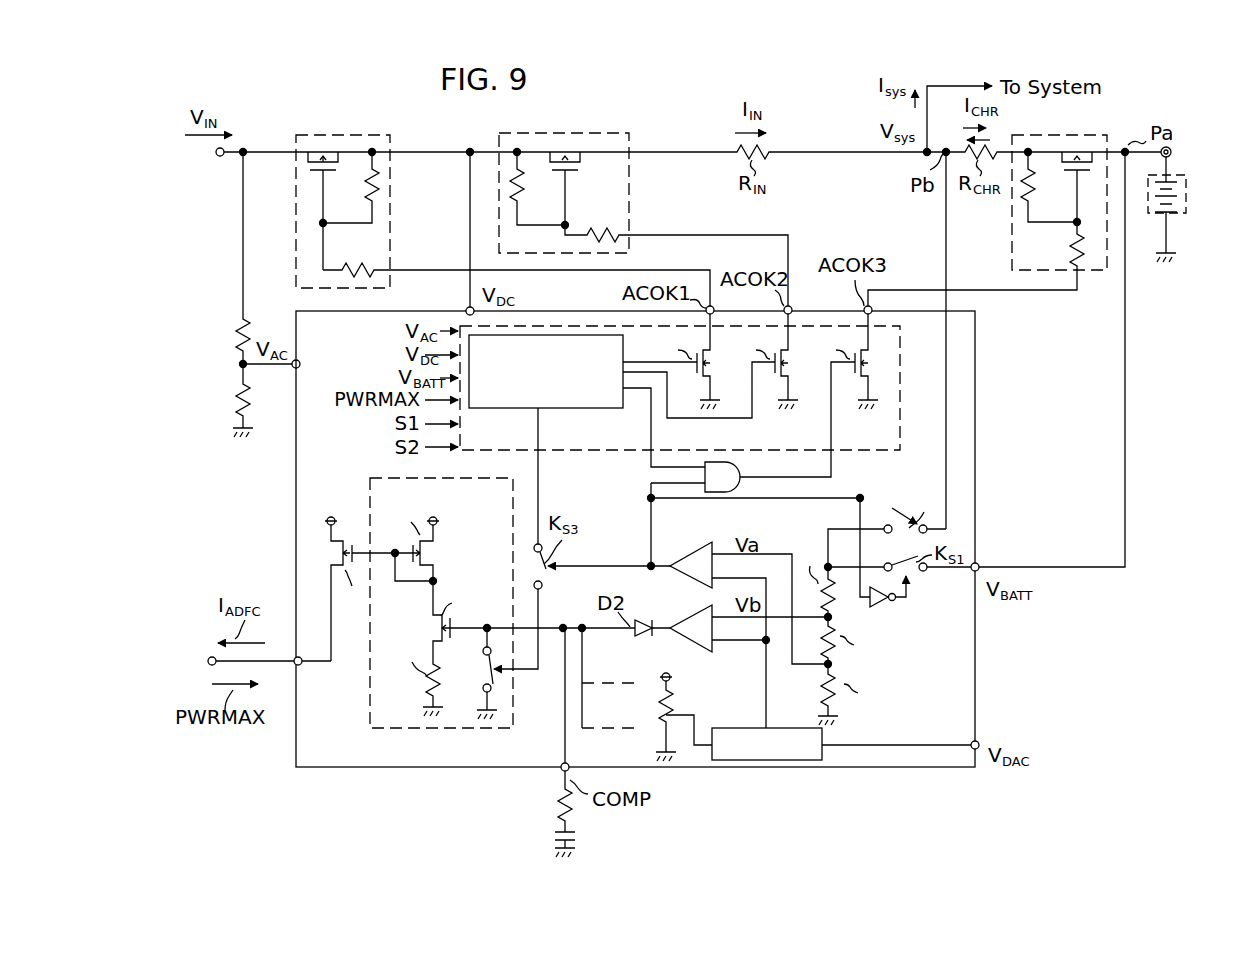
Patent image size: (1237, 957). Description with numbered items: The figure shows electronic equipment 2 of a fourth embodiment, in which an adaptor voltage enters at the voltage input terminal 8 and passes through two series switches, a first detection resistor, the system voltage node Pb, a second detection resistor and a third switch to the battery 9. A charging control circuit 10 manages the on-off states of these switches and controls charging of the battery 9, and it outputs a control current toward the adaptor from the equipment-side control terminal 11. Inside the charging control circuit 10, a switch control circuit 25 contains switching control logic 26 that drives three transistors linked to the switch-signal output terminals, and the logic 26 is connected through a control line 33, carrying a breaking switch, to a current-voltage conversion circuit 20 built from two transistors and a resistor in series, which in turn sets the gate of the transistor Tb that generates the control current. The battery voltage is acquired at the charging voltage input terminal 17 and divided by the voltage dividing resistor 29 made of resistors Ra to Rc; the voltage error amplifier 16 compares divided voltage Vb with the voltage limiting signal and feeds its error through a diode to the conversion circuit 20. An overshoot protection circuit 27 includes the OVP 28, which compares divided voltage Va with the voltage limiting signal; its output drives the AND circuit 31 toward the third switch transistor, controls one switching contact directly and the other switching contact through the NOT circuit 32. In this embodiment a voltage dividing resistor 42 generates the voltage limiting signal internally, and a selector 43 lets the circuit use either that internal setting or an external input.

The electronic equipment 2 is at (1107, 748).
The voltage input terminal 8 is at (216, 152).
The battery 9 is at (1199, 194).
The charging control circuit 10 is at (920, 768).
The equipment-side control terminal 11 is at (206, 661).
The voltage error amplifier 16 is at (677, 622).
The charging voltage input terminal 17 is at (980, 563).
The current-voltage conversion circuit 20 is at (368, 703).
The switch control circuit 25 is at (696, 398).
The switching control logic 26 is at (604, 409).
The overshoot protection circuit 27 is at (896, 490).
The OVP 28 is at (680, 558).
The voltage dividing resistor 29 is at (902, 665).
The AND circuit 31 is at (746, 474).
The NOT circuit 32 is at (890, 600).
The control line 33 is at (544, 486).
The voltage dividing resistor 42 is at (703, 709).
The selector 43 is at (772, 728).